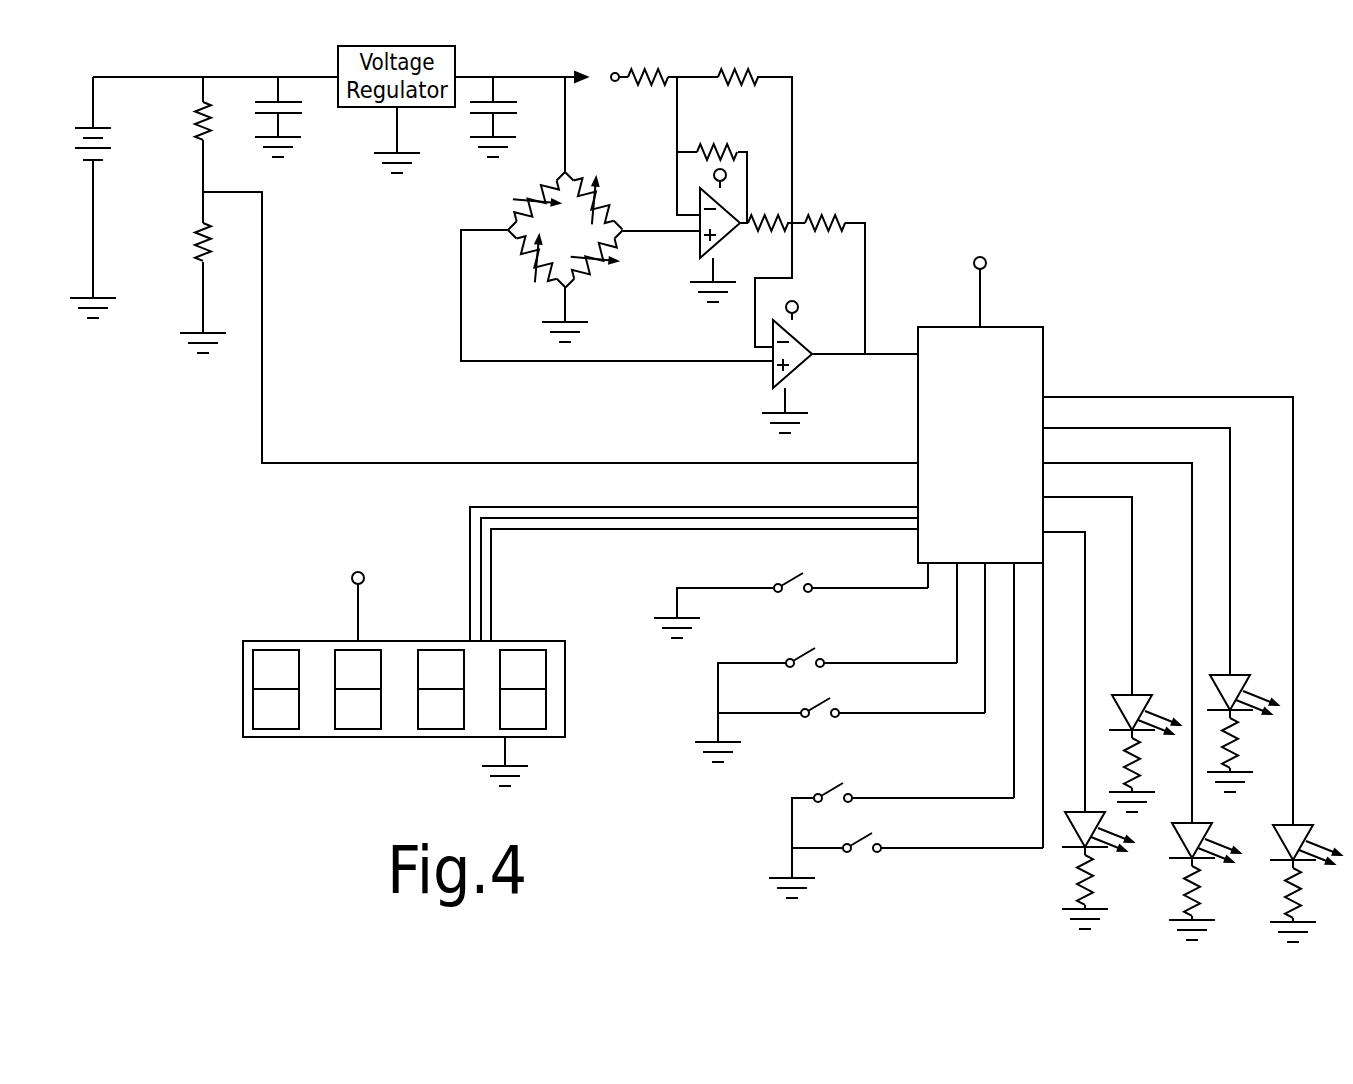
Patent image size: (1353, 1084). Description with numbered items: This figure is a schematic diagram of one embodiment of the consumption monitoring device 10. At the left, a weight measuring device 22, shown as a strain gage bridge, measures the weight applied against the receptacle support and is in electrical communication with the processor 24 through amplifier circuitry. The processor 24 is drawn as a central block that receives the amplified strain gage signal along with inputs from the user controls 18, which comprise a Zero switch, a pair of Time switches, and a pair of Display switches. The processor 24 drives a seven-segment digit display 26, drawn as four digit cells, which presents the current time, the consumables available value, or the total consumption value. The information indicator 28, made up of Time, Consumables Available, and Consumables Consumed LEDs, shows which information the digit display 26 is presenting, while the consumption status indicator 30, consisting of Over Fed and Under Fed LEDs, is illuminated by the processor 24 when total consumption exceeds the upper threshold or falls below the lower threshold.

The consumption monitoring device 10 is at (996, 200).
The user controls 18 is at (714, 587).
The weight measuring device 22 is at (508, 224).
The processor 24 is at (954, 335).
The seven-segment digit display 26 is at (319, 723).
The information indicator 28 is at (1203, 823).
The consumption status indicator 30 is at (1147, 693).